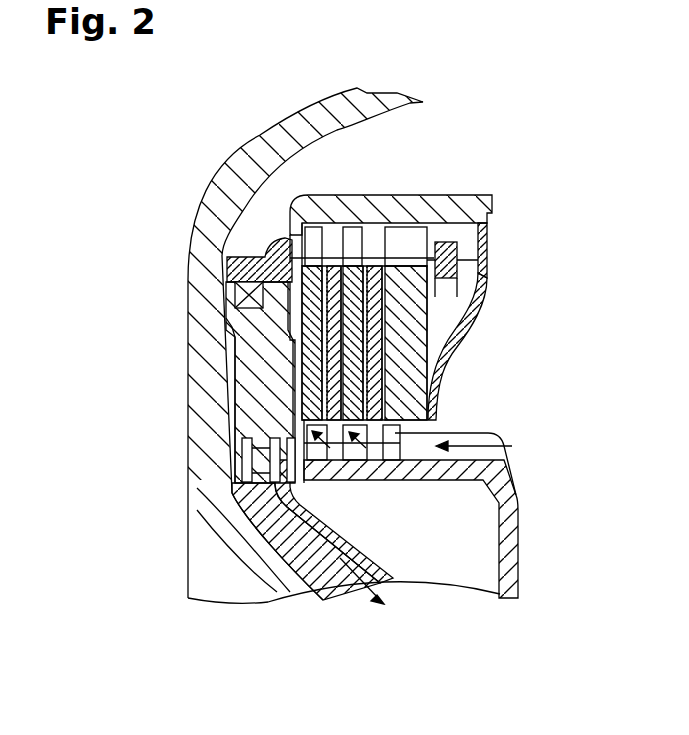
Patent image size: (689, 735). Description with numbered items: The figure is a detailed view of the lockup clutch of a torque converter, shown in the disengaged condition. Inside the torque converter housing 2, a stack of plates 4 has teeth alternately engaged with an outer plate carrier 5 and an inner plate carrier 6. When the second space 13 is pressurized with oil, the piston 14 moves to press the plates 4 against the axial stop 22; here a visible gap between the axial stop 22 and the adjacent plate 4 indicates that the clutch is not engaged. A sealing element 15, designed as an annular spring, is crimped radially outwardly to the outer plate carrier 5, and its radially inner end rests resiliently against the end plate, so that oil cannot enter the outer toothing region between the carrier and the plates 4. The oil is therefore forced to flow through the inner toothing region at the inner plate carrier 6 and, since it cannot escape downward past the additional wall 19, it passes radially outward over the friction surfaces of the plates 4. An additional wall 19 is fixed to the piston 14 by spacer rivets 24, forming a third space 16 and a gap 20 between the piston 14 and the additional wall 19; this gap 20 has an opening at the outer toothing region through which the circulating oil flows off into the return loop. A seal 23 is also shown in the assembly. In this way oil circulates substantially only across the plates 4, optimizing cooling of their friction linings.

The torque converter housing 2 is at (212, 207).
The plate 4 is at (294, 286).
The outer plate carrier 5 is at (473, 210).
The inner plate carrier 6 is at (503, 537).
The second space 13 is at (228, 346).
The piston 14 is at (262, 397).
The sealing element 15 is at (442, 350).
The third space 16 is at (283, 578).
The additional wall 19 is at (334, 533).
The gap 20 is at (318, 583).
The axial stop 22 is at (452, 270).
The seal 23 is at (232, 299).
The spacer rivet 24 is at (265, 462).